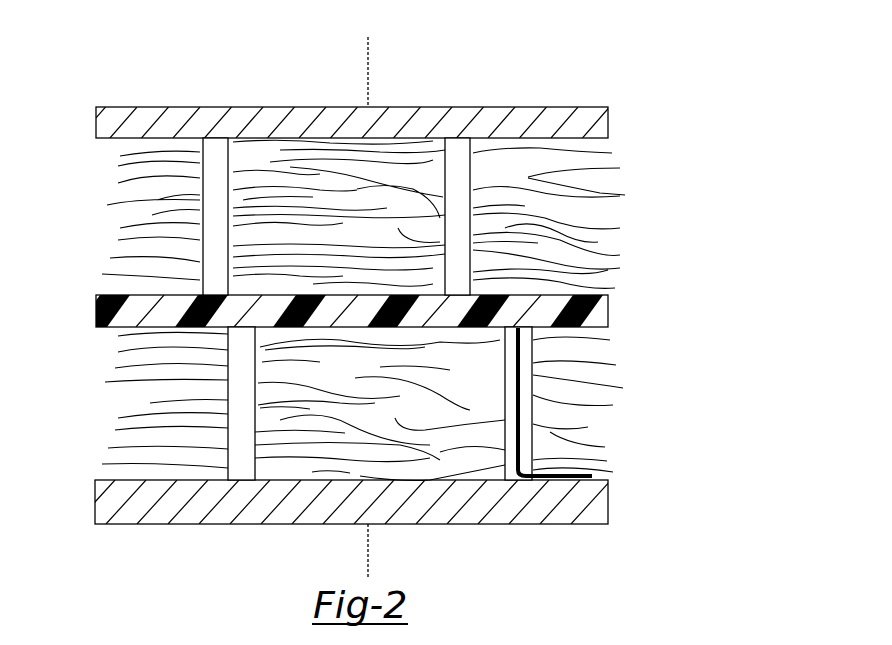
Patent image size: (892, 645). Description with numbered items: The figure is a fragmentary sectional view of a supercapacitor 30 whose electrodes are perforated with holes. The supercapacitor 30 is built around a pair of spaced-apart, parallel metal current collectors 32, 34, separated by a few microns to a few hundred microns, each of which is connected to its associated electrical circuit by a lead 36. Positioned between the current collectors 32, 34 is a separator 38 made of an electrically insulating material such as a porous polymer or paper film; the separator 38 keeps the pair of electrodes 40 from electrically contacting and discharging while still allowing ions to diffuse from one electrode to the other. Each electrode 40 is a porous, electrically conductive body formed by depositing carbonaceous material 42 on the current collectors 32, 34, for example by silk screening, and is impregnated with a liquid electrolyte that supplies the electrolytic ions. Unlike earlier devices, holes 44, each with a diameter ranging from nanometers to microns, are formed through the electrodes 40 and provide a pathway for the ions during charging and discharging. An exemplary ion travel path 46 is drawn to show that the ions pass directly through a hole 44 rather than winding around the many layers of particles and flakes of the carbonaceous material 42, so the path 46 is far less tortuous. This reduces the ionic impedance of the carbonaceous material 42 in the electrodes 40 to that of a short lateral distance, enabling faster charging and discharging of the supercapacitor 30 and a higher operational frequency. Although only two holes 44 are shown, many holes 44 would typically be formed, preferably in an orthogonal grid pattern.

The supercapacitor 30 is at (143, 62).
The metal current collector 32 is at (185, 107).
The metal current collector 34 is at (138, 525).
The lead 36 is at (368, 75).
The separator 38 is at (302, 295).
The electrode 40 is at (590, 182).
The carbonaceous material 42 is at (148, 237).
The hole 44 is at (222, 161).
The ion travel path 46 is at (533, 416).